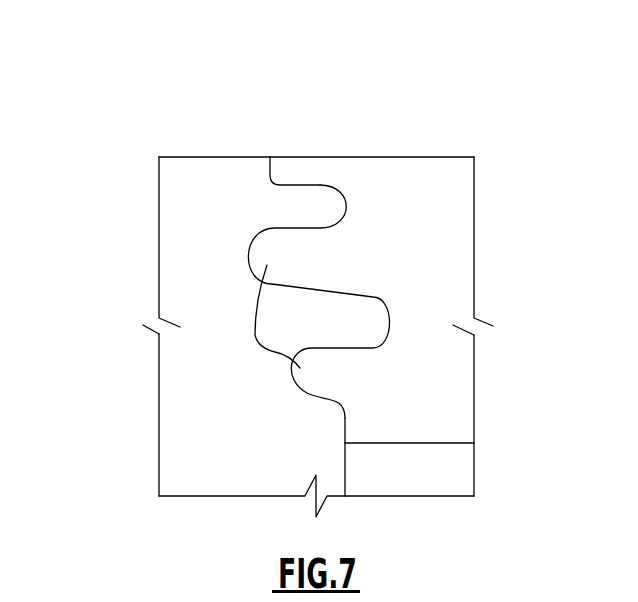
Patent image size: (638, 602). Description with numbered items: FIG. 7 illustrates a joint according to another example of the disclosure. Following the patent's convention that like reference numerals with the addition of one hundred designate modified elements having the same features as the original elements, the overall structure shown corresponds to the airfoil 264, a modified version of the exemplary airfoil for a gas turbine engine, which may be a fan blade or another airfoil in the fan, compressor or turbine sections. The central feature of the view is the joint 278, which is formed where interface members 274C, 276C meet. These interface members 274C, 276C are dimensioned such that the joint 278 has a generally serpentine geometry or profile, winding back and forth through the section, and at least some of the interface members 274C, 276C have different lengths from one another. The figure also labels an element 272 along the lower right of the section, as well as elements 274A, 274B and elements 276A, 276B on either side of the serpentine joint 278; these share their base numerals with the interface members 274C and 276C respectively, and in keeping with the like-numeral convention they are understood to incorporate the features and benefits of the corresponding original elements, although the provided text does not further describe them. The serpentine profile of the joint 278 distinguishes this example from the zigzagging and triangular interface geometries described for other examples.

The component 264 is at (105, 52).
The substrate 272 is at (460, 460).
The first wall portion 274A is at (178, 433).
The second wall portion 274B is at (212, 166).
The interface member 274C is at (333, 212).
The first cavity 276A is at (460, 385).
The second cavity 276B is at (400, 124).
The interface member 276C is at (255, 340).
The joint 278 is at (308, 185).